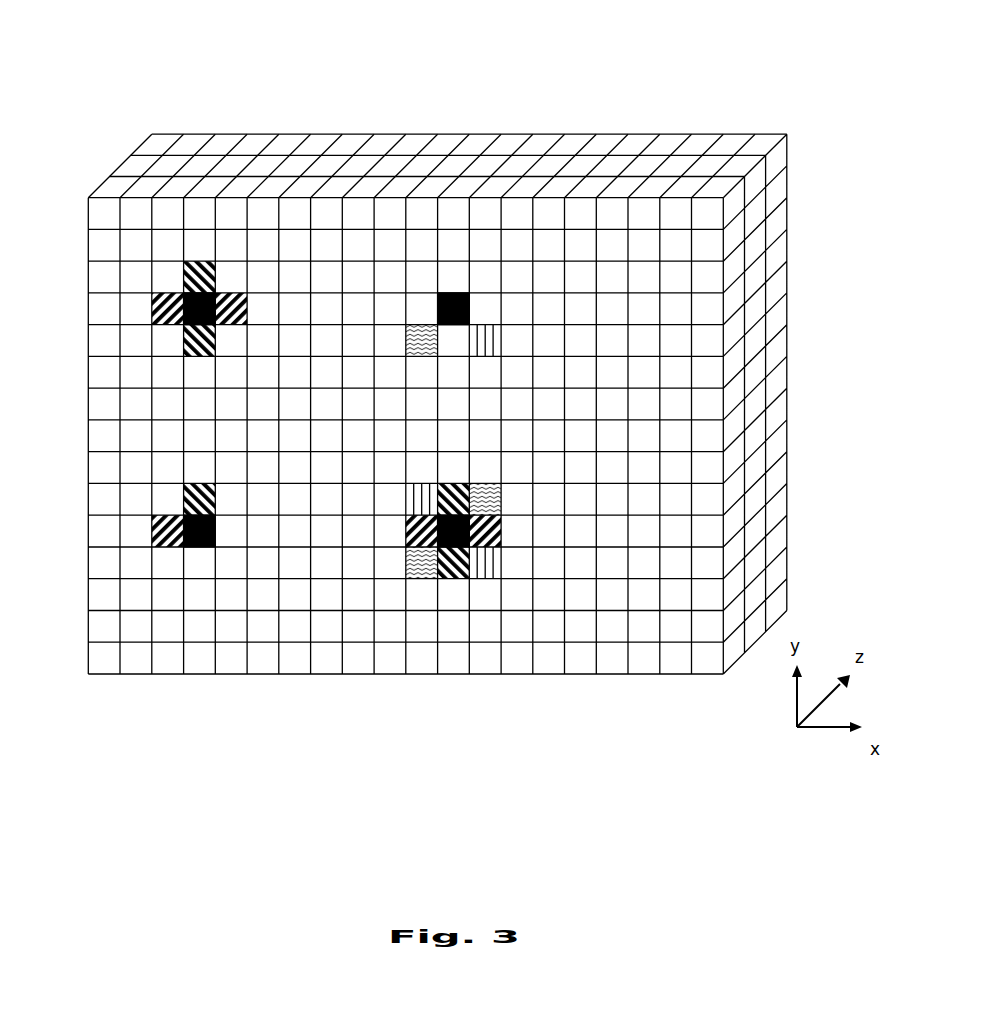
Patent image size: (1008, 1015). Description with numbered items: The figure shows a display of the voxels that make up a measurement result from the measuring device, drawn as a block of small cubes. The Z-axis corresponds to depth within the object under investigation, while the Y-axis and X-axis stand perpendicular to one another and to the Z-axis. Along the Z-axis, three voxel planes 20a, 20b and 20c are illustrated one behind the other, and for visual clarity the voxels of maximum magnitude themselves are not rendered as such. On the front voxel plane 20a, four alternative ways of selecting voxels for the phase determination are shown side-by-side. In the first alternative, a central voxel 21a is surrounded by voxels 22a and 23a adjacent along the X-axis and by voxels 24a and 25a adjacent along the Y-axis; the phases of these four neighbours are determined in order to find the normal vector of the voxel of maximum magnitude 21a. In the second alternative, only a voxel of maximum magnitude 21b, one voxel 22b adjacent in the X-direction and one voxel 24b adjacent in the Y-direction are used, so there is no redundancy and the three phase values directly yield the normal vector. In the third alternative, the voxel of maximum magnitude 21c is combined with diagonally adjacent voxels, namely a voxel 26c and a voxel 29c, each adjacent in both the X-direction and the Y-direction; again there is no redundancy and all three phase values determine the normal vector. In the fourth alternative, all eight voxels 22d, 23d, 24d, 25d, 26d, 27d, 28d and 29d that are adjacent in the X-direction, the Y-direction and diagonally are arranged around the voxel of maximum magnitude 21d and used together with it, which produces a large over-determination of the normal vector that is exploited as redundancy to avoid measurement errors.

The voxel plane 20a is at (640, 176).
The voxel plane 20b is at (693, 155).
The voxel plane 20c is at (745, 134).
The central voxel of maximum magnitude 21a is at (216, 292).
The voxel adjacent along the X-axis 22a is at (170, 293).
The voxel adjacent along the X-axis 23a is at (247, 293).
The voxel adjacent along the Y-axis 24a is at (193, 261).
The voxel adjacent along the Y-axis 25a is at (184, 340).
The voxel of maximum magnitude 21b is at (205, 547).
The voxel adjacent in the X-direction 22b is at (163, 547).
The voxel adjacent in the Y-direction 24b is at (217, 514).
The voxel of maximum magnitude 21c is at (469, 293).
The diagonally adjacent voxel 26c is at (417, 324).
The diagonally adjacent voxel 29c is at (490, 324).
The voxel of maximum magnitude 21d is at (470, 515).
The adjacent voxel 22d is at (405, 547).
The adjacent voxel 23d is at (501, 547).
The adjacent voxel 24d is at (460, 483).
The adjacent voxel 25d is at (461, 578).
The adjacent voxel 26d is at (428, 578).
The adjacent voxel 27d is at (500, 506).
The adjacent voxel 28d is at (405, 497).
The adjacent voxel 29d is at (492, 578).